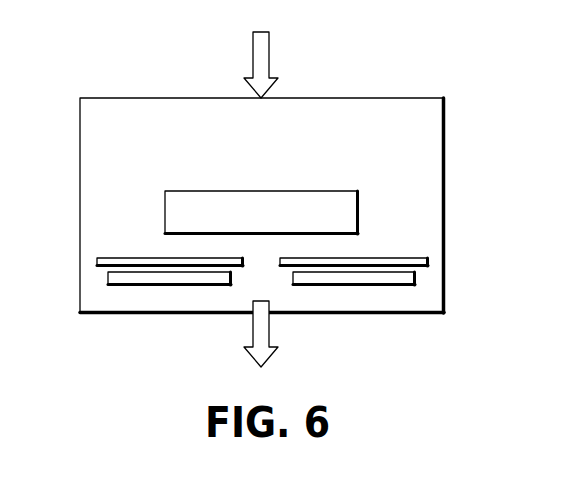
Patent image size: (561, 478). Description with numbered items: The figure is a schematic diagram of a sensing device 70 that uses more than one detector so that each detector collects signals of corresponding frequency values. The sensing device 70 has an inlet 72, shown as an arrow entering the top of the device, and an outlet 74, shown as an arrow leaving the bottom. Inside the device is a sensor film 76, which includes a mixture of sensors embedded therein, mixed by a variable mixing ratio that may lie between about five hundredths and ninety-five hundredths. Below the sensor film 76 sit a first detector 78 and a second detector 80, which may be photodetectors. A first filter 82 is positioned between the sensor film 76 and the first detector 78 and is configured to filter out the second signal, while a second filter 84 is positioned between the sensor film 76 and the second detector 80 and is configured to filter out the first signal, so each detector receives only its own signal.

The sensing device 70 is at (408, 53).
The inlet 72 is at (253, 61).
The outlet 74 is at (269, 327).
The sensor film 76 is at (226, 190).
The first detector 78 is at (168, 285).
The second detector 80 is at (355, 285).
The first filter 82 is at (118, 257).
The second filter 84 is at (405, 257).